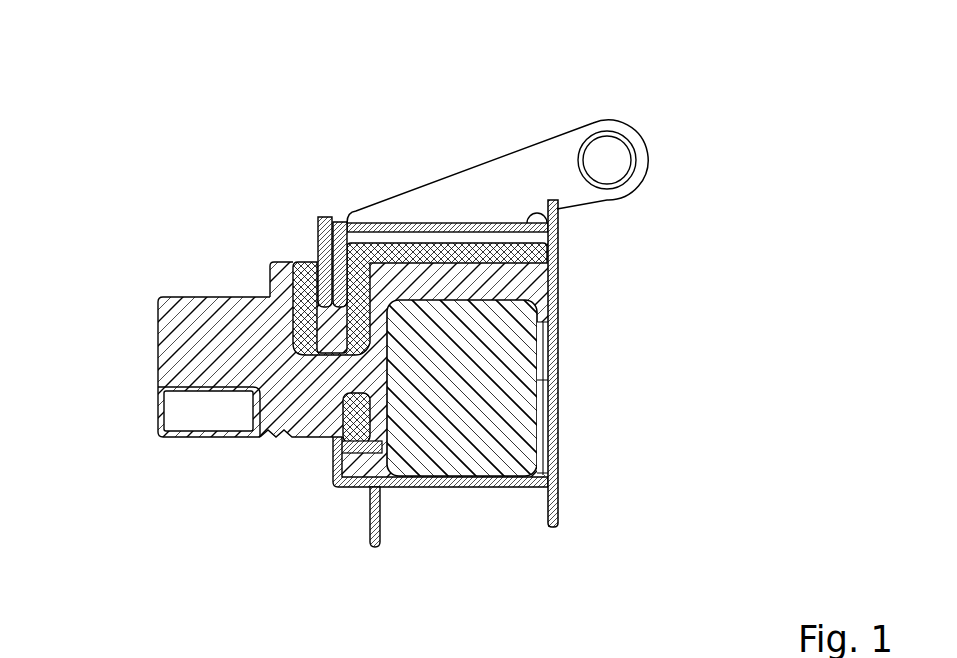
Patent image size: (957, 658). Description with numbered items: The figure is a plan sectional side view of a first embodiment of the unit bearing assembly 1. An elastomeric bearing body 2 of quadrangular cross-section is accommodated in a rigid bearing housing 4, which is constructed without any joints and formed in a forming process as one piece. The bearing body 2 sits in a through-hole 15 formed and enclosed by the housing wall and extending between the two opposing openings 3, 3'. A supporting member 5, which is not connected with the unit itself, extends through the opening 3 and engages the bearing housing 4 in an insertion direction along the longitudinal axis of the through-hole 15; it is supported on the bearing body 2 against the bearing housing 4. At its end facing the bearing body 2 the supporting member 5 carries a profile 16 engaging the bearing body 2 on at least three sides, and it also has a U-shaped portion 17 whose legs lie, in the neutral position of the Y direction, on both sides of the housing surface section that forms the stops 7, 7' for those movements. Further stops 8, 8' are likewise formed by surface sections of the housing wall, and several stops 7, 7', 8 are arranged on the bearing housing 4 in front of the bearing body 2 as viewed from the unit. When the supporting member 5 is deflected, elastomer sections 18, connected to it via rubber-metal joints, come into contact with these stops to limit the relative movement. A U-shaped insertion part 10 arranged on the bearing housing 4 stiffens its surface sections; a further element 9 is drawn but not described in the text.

The unit bearing assembly 1 is at (414, 330).
The bearing body 2 is at (478, 397).
The opening 3 is at (353, 439).
The opening 3' is at (665, 395).
The bearing housing 4 is at (558, 224).
The supporting member 5 is at (208, 337).
The stop 7 is at (326, 166).
The stop 7' is at (371, 166).
The stop 8 is at (432, 536).
The stop 8' is at (447, 128).
The fastening eye 9 is at (553, 167).
The insertion part 10 is at (381, 540).
The through-hole 15 is at (578, 473).
The profile 16 is at (578, 300).
The U-shaped portion 17 is at (262, 257).
The elastomer sections 18 is at (297, 260).